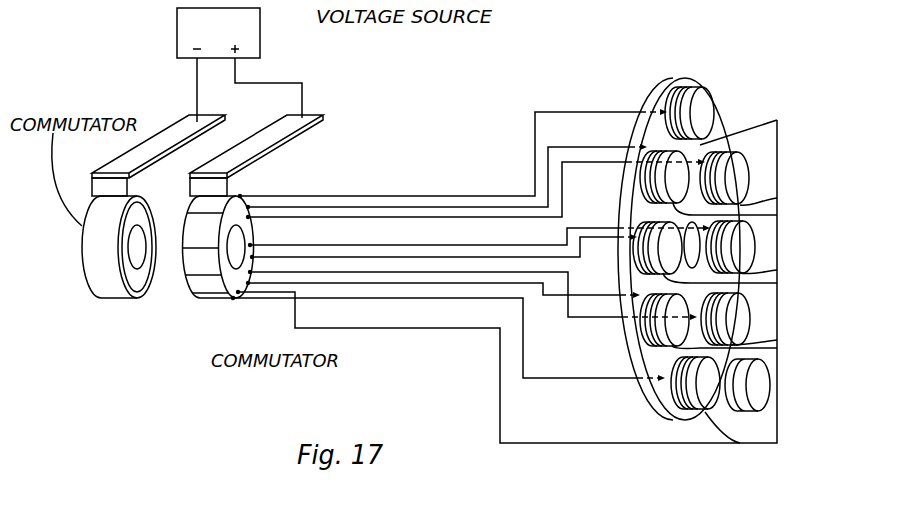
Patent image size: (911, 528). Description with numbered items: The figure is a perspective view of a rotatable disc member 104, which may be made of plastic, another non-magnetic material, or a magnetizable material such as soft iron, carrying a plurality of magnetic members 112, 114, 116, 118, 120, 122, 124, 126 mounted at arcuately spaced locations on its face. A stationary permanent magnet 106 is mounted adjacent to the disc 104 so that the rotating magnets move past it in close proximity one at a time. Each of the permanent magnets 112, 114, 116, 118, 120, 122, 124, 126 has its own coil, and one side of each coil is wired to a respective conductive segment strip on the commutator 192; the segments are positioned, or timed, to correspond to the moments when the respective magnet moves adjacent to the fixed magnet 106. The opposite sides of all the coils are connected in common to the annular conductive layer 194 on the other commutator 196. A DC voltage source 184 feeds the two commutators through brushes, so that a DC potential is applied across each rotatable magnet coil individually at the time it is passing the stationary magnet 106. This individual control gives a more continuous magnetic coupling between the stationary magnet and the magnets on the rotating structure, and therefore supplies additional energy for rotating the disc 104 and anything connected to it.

The voltage source 184 is at (237, 20).
The commutator 196 is at (107, 309).
The annular conductive layer 194 is at (137, 298).
The commutator 192 is at (227, 311).
The magnetic member 120 is at (714, 392).
The magnetic member 112 is at (702, 110).
The magnetic member 114 is at (740, 180).
The magnetic member 116 is at (745, 247).
The magnetic member 118 is at (735, 322).
The stationary permanent magnet 106 is at (757, 393).
The rotatable disc member 104 is at (672, 390).
The magnetic member 122 is at (673, 331).
The magnetic member 124 is at (663, 253).
The magnetic member 126 is at (672, 180).